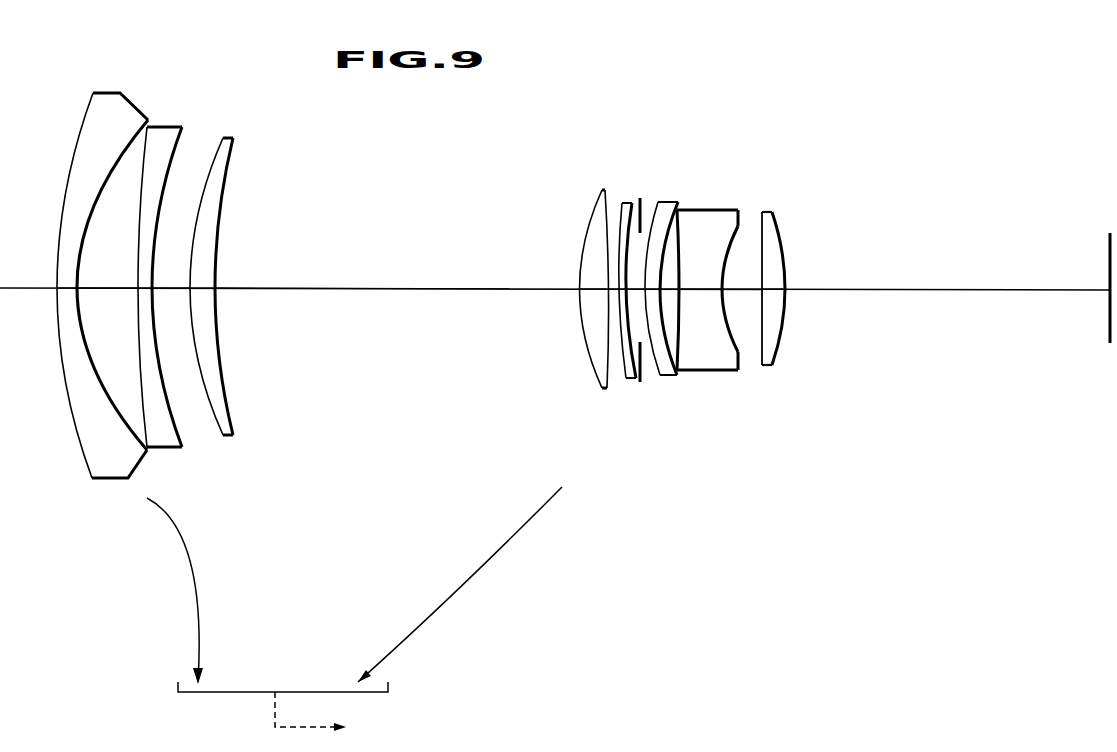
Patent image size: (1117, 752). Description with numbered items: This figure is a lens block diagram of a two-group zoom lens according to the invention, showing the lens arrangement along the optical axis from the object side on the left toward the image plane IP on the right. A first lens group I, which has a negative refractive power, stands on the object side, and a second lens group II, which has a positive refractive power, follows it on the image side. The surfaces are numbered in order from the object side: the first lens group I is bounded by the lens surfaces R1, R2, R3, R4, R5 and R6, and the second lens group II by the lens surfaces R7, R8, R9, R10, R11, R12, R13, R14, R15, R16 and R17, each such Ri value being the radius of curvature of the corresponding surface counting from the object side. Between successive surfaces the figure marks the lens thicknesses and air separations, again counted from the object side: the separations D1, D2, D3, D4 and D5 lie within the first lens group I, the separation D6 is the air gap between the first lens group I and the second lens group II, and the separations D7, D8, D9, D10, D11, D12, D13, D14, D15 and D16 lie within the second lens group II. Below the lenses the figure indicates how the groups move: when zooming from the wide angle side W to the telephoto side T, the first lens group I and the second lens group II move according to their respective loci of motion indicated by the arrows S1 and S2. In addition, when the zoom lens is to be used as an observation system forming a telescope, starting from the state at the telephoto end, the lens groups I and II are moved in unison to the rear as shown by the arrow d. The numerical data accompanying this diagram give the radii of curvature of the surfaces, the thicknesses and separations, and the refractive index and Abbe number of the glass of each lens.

The first lens group I is at (253, 60).
The second lens group II is at (795, 103).
The first lens surface R1 is at (79, 134).
The second lens surface R2 is at (124, 150).
The third lens surface R3 is at (147, 152).
The fourth lens surface R4 is at (170, 168).
The fifth lens surface R5 is at (210, 168).
The sixth lens surface R6 is at (229, 170).
The seventh lens surface R7 is at (587, 228).
The eighth lens surface R8 is at (605, 222).
The ninth lens surface R9 is at (621, 208).
The tenth lens surface R10 is at (629, 212).
The eleventh lens surface R11 is at (652, 225).
The twelfth lens surface R12 is at (668, 230).
The thirteenth lens surface R13 is at (679, 226).
The fourteenth lens surface R14 is at (729, 232).
The fifteenth lens surface R15 is at (740, 225).
The sixteenth lens surface R16 is at (762, 225).
The seventeenth lens surface R17 is at (778, 232).
The first lens thickness or air separation D1 is at (65, 293).
The second lens thickness or air separation D2 is at (110, 293).
The third lens thickness or air separation D3 is at (145, 293).
The fourth lens thickness or air separation D4 is at (172, 293).
The fifth lens thickness or air separation D5 is at (205, 293).
The sixth lens thickness or air separation D6 is at (357, 291).
The seventh lens thickness or air separation D7 is at (590, 292).
The eighth lens thickness or air separation D8 is at (612, 292).
The ninth lens thickness or air separation D9 is at (622, 292).
The tenth lens thickness or air separation D10 is at (633, 292).
The eleventh lens thickness or air separation D11 is at (652, 292).
The twelfth lens thickness or air separation D12 is at (669, 292).
The thirteenth lens thickness or air separation D13 is at (700, 292).
The fourteenth lens thickness or air separation D14 is at (726, 292).
The fifteenth lens thickness or air separation D15 is at (750, 292).
The sixteenth lens thickness or air separation D16 is at (773, 292).
The image plane IP is at (1108, 252).
The wide-angle position W is at (49, 510).
The telephoto position T is at (220, 690).
The arrow indicating locus of motion of first lens group S1 is at (175, 590).
The arrow indicating locus of motion of second lens group S2 is at (460, 582).
The arrow indicating rearward movement in unison d is at (317, 713).